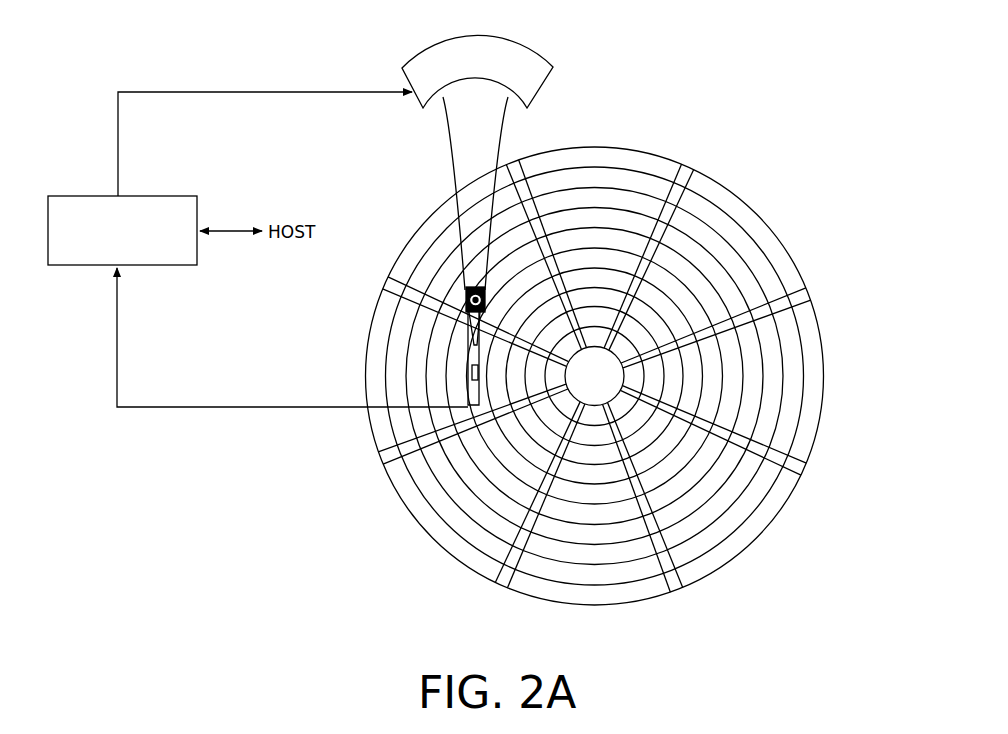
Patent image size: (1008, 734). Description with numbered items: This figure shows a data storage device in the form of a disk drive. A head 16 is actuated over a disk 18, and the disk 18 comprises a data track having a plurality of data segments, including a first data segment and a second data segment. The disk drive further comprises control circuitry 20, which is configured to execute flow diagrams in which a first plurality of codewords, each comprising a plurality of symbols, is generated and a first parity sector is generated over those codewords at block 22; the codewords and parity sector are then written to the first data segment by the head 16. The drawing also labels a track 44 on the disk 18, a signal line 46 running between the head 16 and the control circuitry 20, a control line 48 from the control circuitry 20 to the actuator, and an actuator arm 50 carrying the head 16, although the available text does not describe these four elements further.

The head 16 is at (486, 366).
The disk 18 is at (595, 349).
The control circuitry 20 is at (416, 105).
The block 22 is at (163, 196).
The data tracks 44 is at (593, 178).
The read signal line 46 is at (266, 407).
The VCM control signal line 48 is at (118, 142).
The actuator arm 50 is at (455, 182).